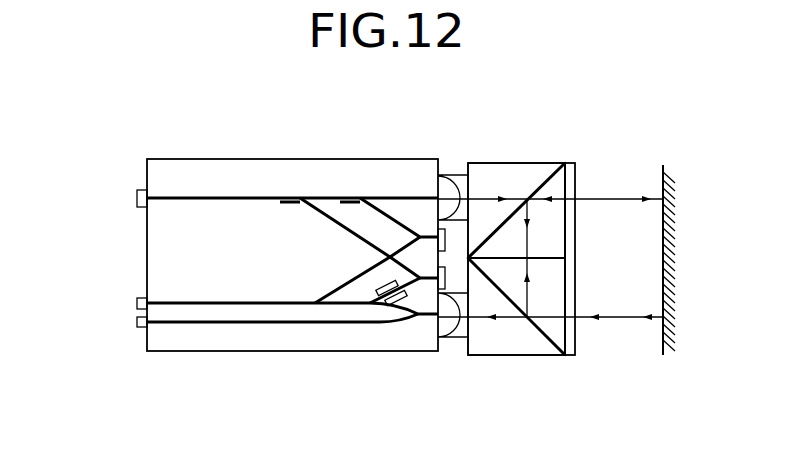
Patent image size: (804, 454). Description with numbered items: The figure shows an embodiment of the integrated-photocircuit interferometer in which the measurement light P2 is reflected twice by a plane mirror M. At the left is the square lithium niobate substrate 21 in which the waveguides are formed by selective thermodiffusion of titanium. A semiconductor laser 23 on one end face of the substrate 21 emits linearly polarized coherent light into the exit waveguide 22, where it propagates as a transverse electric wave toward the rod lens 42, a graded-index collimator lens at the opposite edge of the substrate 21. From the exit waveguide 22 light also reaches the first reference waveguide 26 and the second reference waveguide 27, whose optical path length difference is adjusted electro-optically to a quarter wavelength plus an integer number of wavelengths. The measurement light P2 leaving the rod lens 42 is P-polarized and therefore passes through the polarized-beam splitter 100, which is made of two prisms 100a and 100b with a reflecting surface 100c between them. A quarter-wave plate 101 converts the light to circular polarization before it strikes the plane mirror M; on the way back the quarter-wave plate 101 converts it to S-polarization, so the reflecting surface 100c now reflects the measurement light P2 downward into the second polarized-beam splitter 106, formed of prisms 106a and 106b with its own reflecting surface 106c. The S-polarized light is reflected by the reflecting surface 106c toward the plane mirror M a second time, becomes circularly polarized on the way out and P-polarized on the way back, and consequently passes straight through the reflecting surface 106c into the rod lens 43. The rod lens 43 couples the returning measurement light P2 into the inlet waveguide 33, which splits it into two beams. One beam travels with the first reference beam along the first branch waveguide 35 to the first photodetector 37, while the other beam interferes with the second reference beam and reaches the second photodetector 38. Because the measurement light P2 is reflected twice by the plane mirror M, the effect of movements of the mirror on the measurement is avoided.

The substrate 21 is at (268, 160).
The exit waveguide 22 is at (215, 196).
The laser 23 is at (138, 192).
The first reference waveguide 26 is at (377, 206).
The second reference waveguide 27 is at (323, 214).
The inlet waveguide 33 is at (420, 318).
The first branch waveguide 35 is at (210, 301).
The first photodetector 37 is at (137, 300).
The second photodetector 38 is at (137, 322).
The rod lens 42 is at (452, 176).
The rod lens 43 is at (447, 337).
The polarized-beam splitter 100 is at (612, 105).
The prism 100a is at (503, 178).
The prism 100b is at (545, 192).
The reflecting surface 100c is at (523, 212).
The quarter-wave plate 101 is at (576, 175).
The second polarized-beam splitter 106 is at (628, 405).
The prism 106a is at (518, 343).
The prism 106b is at (553, 325).
The reflecting surface 106c is at (495, 294).
The plane mirror M is at (663, 178).
The measurement light P2 is at (630, 201).